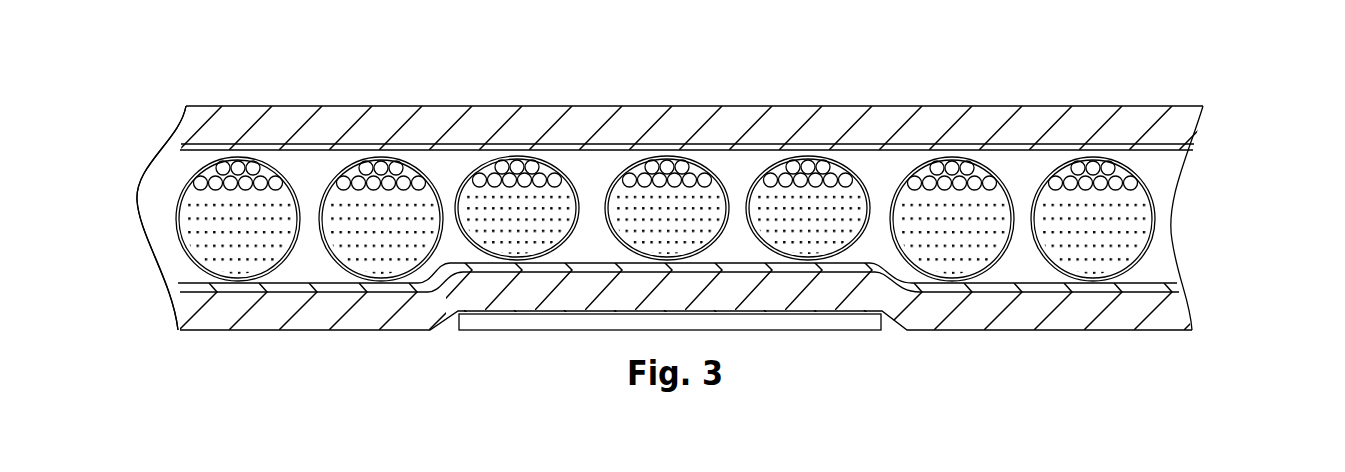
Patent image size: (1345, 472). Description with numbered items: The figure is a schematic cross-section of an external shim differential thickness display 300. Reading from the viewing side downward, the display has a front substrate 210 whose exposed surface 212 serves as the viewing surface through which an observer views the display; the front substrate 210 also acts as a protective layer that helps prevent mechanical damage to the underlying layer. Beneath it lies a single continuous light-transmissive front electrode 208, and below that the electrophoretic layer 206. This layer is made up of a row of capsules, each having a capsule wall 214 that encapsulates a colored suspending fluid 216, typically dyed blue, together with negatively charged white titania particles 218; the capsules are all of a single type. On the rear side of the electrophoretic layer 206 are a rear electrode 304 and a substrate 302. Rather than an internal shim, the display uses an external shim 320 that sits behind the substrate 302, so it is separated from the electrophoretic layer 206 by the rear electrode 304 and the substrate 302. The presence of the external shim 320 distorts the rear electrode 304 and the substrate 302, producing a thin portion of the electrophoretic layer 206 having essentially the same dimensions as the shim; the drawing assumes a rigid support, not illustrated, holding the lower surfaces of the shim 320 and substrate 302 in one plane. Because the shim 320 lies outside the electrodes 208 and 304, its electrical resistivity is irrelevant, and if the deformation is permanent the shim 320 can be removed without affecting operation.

The electrophoretic layer 206 is at (155, 204).
The front electrode 208 is at (612, 150).
The front substrate 210 is at (972, 133).
The exposed surface 212 is at (882, 106).
The capsule wall 214 is at (287, 160).
The colored suspending fluid 216 is at (230, 217).
The white titania particles 218 is at (392, 158).
The external shim differential thickness display 300 is at (1212, 209).
The substrate 302 is at (925, 310).
The rear electrode 304 is at (1048, 285).
The external shim 320 is at (815, 318).